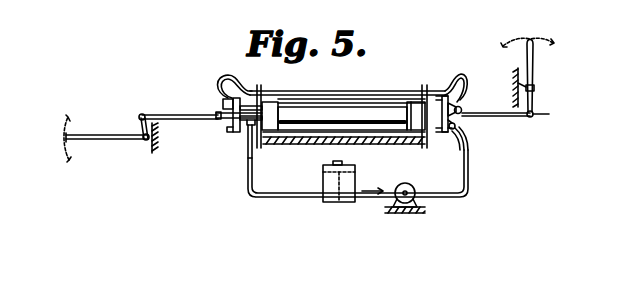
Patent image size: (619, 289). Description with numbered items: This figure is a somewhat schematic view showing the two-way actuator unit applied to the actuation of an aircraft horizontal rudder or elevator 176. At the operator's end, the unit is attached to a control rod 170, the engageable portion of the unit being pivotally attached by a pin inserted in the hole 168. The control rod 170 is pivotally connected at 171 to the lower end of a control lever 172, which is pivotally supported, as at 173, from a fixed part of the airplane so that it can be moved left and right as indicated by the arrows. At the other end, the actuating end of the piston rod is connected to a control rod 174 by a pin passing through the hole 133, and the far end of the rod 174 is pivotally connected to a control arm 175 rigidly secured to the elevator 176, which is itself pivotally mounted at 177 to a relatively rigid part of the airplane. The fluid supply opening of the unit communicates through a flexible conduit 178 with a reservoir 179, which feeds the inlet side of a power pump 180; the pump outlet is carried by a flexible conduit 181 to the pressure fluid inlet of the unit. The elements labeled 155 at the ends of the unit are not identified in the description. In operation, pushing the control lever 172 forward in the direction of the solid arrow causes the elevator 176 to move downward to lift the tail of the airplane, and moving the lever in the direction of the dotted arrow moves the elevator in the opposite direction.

The hole 133 is at (218, 120).
The hydraulic hose 155 is at (226, 76).
The hole 168 is at (461, 108).
The control rod 170 is at (484, 118).
The pivotal connection 171 is at (552, 115).
The control lever 172 is at (531, 39).
The pivotal support 173 is at (534, 87).
The control rod 174 is at (172, 114).
The control arm 175 is at (139, 118).
The horizontal rudder or elevator 176 is at (102, 141).
The pivot mounting 177 is at (146, 141).
The flexible conduit 178 is at (247, 160).
The reservoir 179 is at (322, 172).
The power pump 180 is at (404, 183).
The flexible conduit 181 is at (469, 176).